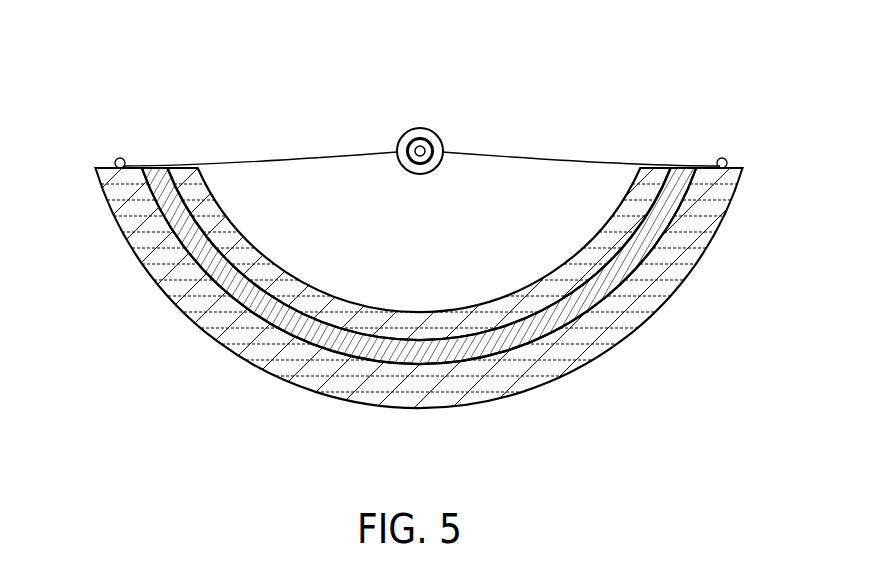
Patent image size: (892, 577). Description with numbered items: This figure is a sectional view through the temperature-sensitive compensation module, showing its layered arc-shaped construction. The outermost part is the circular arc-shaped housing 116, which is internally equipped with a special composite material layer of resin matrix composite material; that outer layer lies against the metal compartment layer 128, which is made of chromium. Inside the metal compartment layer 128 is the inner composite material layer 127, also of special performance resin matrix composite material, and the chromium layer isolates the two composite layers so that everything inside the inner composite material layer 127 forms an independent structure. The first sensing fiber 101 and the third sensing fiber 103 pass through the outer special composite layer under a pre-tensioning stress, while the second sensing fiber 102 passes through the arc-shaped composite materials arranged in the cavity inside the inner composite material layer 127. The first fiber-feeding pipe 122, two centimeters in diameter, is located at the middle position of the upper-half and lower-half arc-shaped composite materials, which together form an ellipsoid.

The first sensing fiber 101 is at (120, 157).
The second sensing fiber 102 is at (420, 146).
The third sensing fiber 103 is at (722, 157).
The circular arc-shaped housing 116 is at (452, 388).
The first fiber-feeding pipe 122 is at (420, 164).
The inner composite material layer 127 is at (508, 298).
The metal compartment layer 128 is at (253, 295).